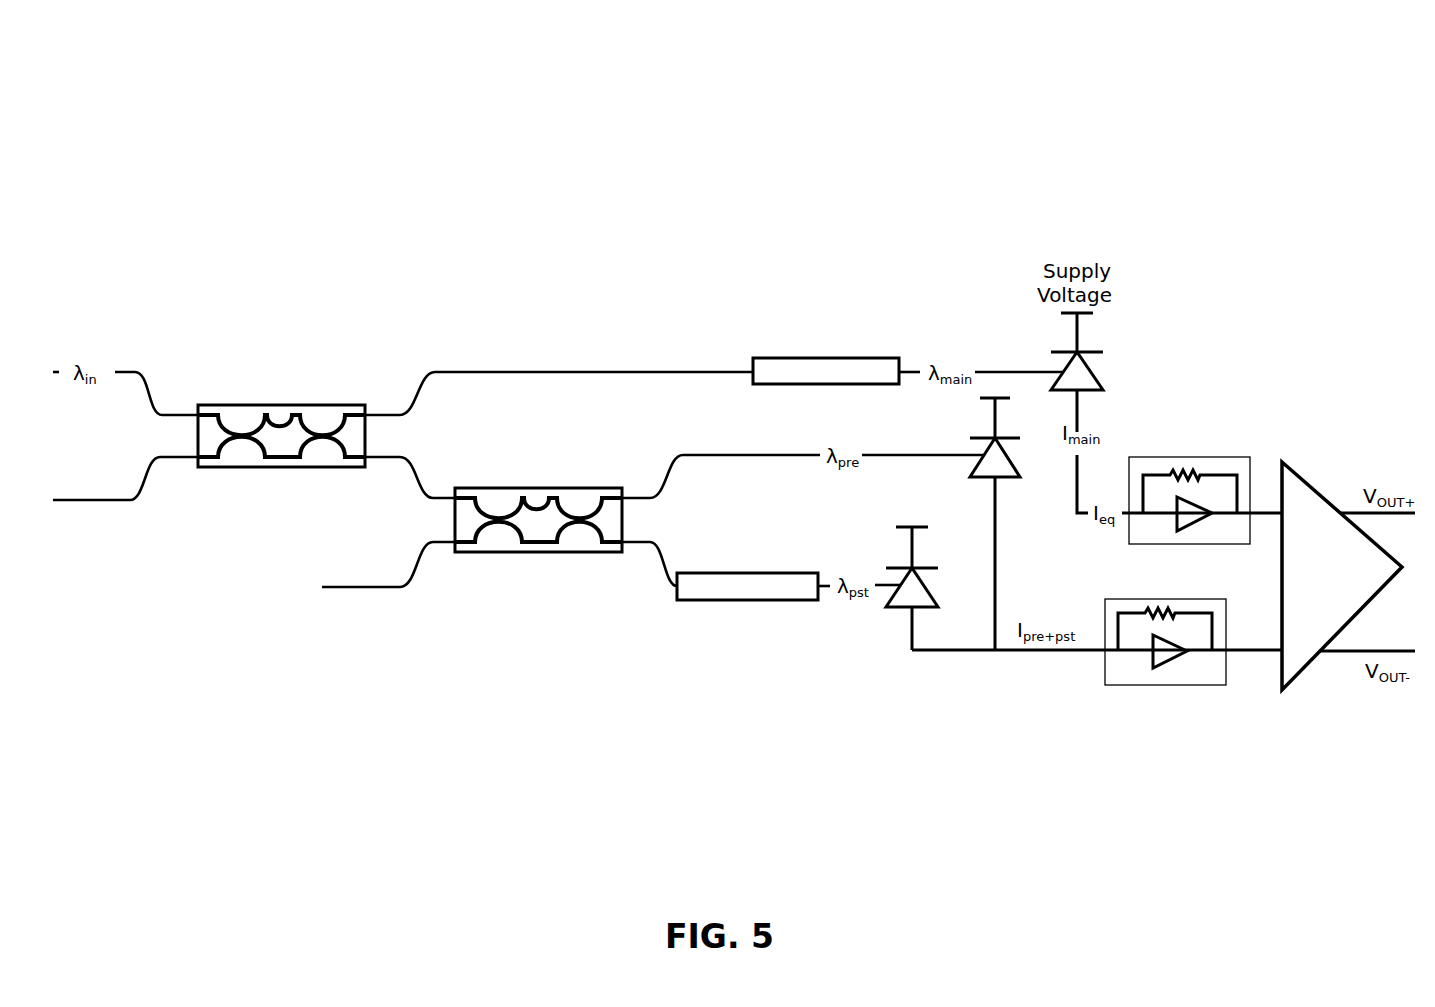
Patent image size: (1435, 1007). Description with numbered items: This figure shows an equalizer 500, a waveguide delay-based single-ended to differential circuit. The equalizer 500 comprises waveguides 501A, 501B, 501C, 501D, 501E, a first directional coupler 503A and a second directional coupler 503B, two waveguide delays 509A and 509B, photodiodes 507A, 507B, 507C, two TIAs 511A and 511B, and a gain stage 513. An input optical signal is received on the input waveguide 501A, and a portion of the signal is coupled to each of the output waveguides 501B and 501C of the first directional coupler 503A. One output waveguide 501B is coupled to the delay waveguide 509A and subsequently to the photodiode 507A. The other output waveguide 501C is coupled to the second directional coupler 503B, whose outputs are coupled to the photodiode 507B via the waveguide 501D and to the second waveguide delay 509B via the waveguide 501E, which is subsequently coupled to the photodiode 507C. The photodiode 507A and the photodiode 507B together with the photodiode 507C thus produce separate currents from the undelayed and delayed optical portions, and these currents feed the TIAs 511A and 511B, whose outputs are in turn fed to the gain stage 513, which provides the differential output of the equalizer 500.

The equalizer 500 is at (292, 110).
The input waveguide 501A is at (118, 373).
The output waveguide 501B is at (715, 373).
The output waveguide 501C is at (413, 474).
The waveguide 501D is at (678, 457).
The waveguide 501E is at (663, 557).
The first directional coupler 503A is at (272, 405).
The second directional coupler 503B is at (540, 488).
The photodiode 507A is at (1102, 388).
The photodiode 507B is at (1015, 478).
The photodiode 507C is at (896, 566).
The delay waveguide 509A is at (800, 358).
The second waveguide delay 509B is at (722, 573).
The TIA 511A is at (1192, 457).
The TIA 511B is at (1180, 685).
The gain stage 513 is at (1294, 473).